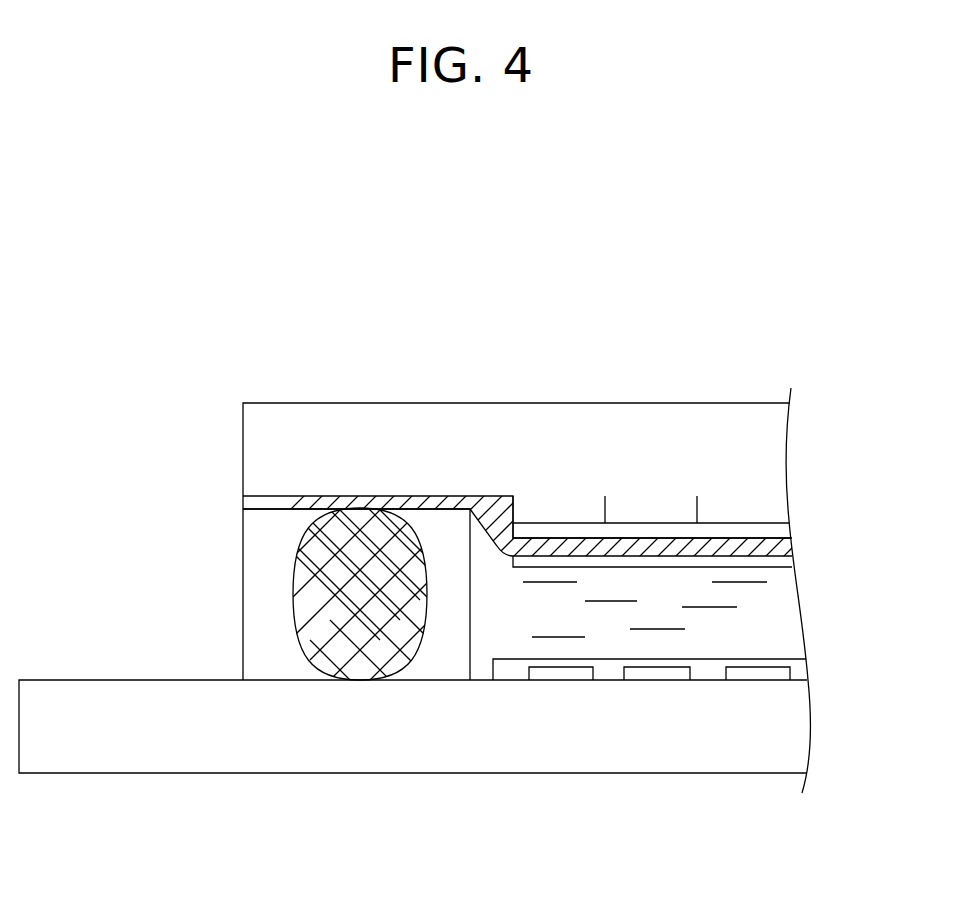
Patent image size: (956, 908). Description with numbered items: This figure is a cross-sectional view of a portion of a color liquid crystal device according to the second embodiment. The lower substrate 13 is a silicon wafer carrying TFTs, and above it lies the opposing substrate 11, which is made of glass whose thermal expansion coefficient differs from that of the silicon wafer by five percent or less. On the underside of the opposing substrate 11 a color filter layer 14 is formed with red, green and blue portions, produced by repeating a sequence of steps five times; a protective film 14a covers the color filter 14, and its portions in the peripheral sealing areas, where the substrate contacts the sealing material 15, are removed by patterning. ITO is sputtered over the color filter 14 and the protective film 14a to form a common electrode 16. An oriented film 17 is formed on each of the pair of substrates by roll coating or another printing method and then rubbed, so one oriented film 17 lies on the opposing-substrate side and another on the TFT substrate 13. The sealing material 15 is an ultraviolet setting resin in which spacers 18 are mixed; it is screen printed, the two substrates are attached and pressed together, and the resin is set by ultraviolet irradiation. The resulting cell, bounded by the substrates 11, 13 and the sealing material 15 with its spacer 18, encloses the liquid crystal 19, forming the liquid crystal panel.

The opposing substrate 11 is at (258, 455).
The substrate 13 is at (77, 708).
The color filter layer 14 is at (573, 496).
The protective film 14a is at (788, 534).
The sealing material 15 is at (243, 640).
The common electrode 16 is at (788, 546).
The oriented film 17 is at (792, 562).
The spacers 18 is at (293, 572).
The liquid crystal 19 is at (780, 617).